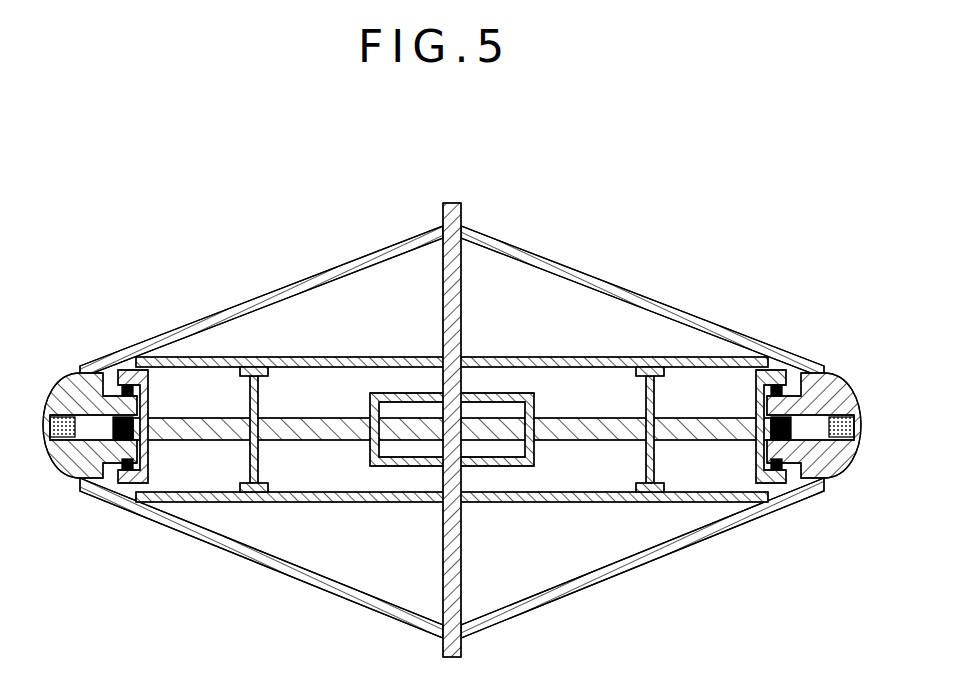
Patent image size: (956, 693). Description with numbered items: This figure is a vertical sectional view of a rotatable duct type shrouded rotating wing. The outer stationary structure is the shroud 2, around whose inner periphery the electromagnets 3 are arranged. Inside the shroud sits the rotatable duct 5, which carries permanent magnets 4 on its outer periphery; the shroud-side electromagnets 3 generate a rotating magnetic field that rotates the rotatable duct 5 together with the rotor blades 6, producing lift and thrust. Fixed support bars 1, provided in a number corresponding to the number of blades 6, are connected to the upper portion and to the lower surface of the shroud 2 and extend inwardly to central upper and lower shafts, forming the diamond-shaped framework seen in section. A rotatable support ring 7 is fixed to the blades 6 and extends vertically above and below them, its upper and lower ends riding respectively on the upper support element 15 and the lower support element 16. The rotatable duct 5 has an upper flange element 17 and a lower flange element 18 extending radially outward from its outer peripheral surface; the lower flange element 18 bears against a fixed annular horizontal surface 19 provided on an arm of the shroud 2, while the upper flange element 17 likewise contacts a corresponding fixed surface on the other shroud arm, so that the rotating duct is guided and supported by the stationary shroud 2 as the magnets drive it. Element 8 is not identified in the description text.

The fixed support bar 1 is at (246, 557).
The shroud 2 is at (62, 470).
The electromagnet 3 is at (44, 430).
The permanent magnet 4 is at (112, 372).
The rotatable duct 5 is at (168, 357).
The rotor blade 6 is at (208, 418).
The rotatable support ring 7 is at (259, 405).
The central block 8 is at (553, 393).
The upper support element 15 is at (662, 378).
The lower support element 16 is at (662, 486).
The upper flange element 17 is at (777, 386).
The lower flange element 18 is at (783, 495).
The annular horizontal surface 19 is at (783, 472).